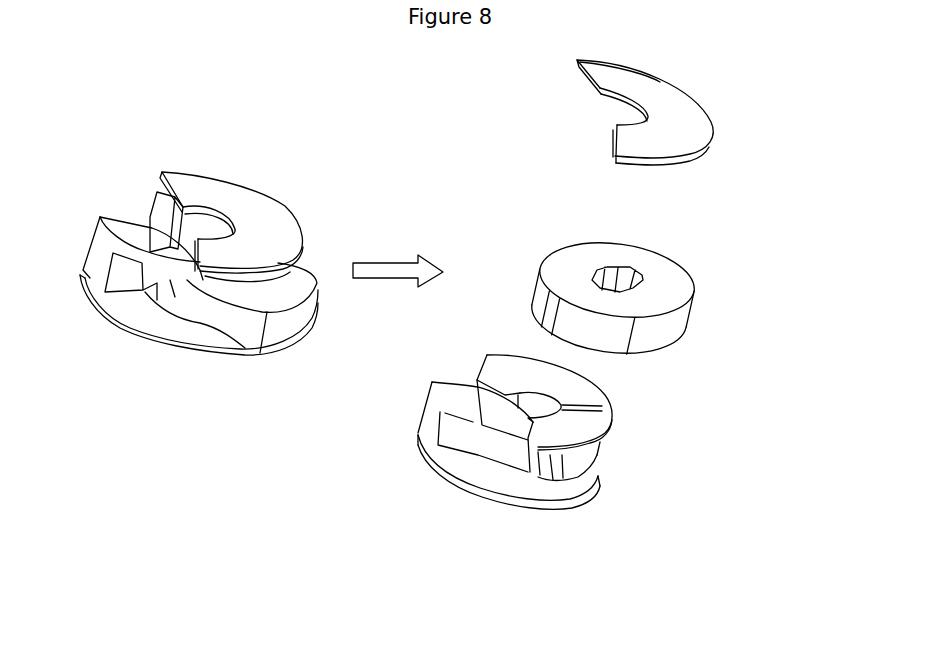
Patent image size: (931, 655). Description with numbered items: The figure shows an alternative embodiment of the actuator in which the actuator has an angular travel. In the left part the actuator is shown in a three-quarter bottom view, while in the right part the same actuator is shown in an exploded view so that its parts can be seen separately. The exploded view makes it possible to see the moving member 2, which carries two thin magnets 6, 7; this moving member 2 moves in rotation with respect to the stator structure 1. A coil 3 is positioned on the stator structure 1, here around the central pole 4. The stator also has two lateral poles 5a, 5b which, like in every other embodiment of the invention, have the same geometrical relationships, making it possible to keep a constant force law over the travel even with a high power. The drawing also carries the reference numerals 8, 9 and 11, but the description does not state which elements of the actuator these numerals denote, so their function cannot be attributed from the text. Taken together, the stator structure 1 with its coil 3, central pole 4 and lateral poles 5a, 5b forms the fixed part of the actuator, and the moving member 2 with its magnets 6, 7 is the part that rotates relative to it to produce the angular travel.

The stator structure 1 is at (525, 423).
The moving member 2 is at (606, 103).
The coil 3 is at (645, 265).
The central pole 4 is at (577, 466).
The lateral pole 5a is at (507, 393).
The lateral pole 5b is at (441, 437).
The thin magnet 6 is at (670, 169).
The thin magnet 7 is at (600, 101).
The slot 8 is at (492, 425).
The top surface step 9 is at (567, 390).
The outer edge of hook plate 11 is at (627, 75).